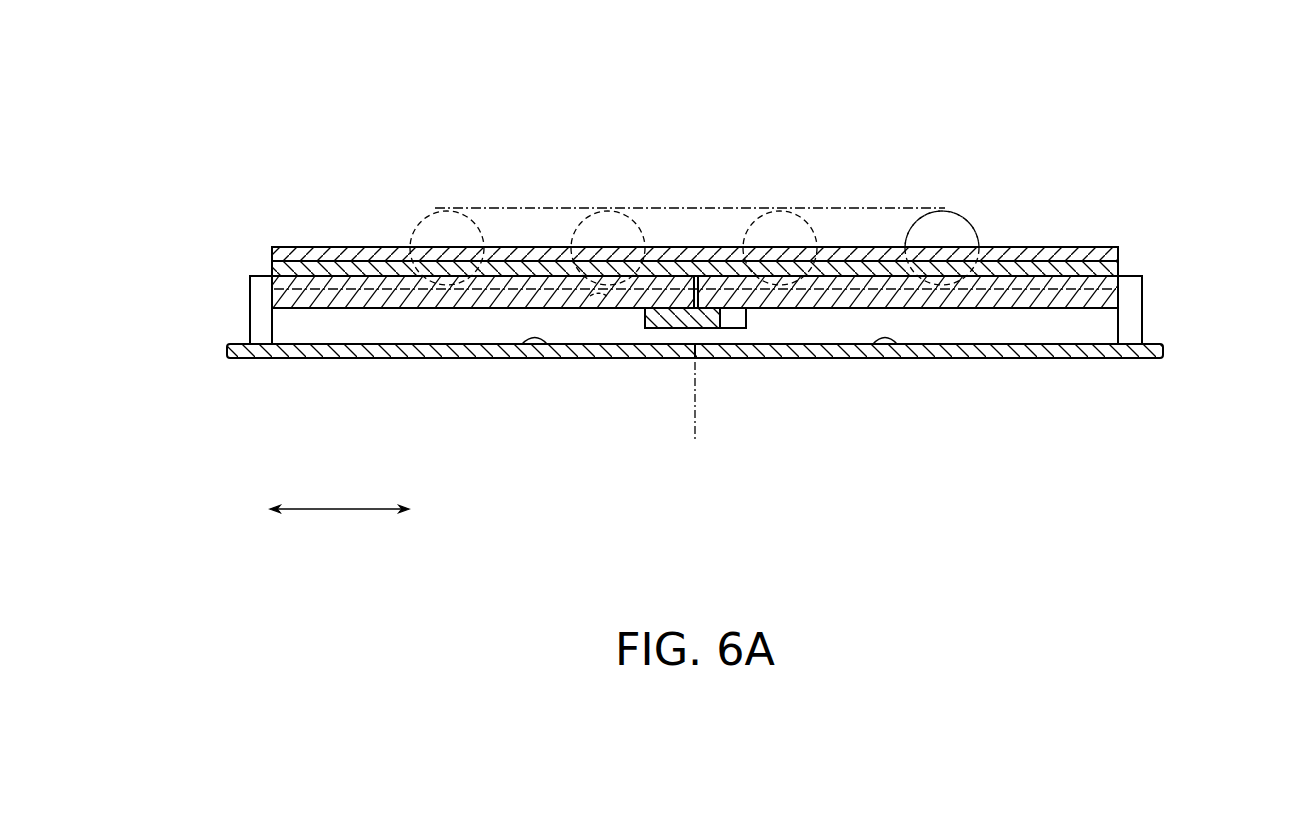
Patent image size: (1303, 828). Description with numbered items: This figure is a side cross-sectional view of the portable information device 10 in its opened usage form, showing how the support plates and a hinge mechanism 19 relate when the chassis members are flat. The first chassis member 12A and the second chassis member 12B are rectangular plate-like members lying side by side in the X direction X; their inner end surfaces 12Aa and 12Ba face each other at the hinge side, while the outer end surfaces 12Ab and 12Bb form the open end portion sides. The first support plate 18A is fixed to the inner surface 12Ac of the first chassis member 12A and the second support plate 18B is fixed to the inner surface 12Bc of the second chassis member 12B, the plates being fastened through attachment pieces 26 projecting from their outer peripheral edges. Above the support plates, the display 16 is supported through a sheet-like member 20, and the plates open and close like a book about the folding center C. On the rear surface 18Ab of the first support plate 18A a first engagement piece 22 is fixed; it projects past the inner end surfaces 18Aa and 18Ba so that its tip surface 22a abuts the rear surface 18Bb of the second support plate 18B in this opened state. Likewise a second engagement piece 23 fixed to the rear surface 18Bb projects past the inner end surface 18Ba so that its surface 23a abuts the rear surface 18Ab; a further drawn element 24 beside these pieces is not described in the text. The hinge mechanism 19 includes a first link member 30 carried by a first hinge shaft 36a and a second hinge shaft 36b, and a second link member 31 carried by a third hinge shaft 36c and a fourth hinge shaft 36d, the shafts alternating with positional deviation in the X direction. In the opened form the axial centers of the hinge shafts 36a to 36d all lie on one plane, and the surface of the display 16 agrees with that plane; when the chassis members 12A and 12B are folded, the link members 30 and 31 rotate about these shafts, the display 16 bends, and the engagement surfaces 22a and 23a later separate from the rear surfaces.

The portable information device 10 is at (227, 103).
The first chassis member 12A is at (318, 358).
The inner end surface of first chassis member 12Aa is at (702, 352).
The outer end surface of first chassis member 12Ab is at (268, 298).
The inner surface of first chassis member 12Ac is at (530, 359).
The second chassis member 12B is at (1105, 358).
The inner end surface of second chassis member 12Ba is at (688, 352).
The outer end surface of second chassis member 12Bb is at (1120, 296).
The inner surface of second chassis member 12Bc is at (870, 359).
The display 16 is at (1118, 256).
The first support plate 18A is at (372, 308).
The inner end surface of first support plate 18Aa is at (695, 290).
The rear surface of first support plate 18Ab is at (460, 309).
The second support plate 18B is at (1042, 308).
The inner end surface of second support plate 18Ba is at (697, 290).
The rear surface of second support plate 18Bb is at (942, 309).
The hinge mechanism 19 is at (972, 204).
The sheet-like member 20 is at (1115, 269).
The first engagement piece 22 is at (684, 322).
The surface of first engagement piece 22a is at (700, 302).
The second engagement piece 23 is at (730, 320).
The surface of second engagement piece 23a is at (597, 300).
The corner portion 24 is at (638, 328).
The attachment piece 26 is at (256, 288).
The first link member 30 is at (522, 209).
The second link member 31 is at (862, 209).
The first hinge shaft 36a is at (452, 212).
The second hinge shaft 36b is at (784, 212).
The third hinge shaft 36c is at (614, 212).
The fourth hinge shaft 36d is at (942, 226).
The folding center C is at (694, 417).
The X direction X is at (339, 525).